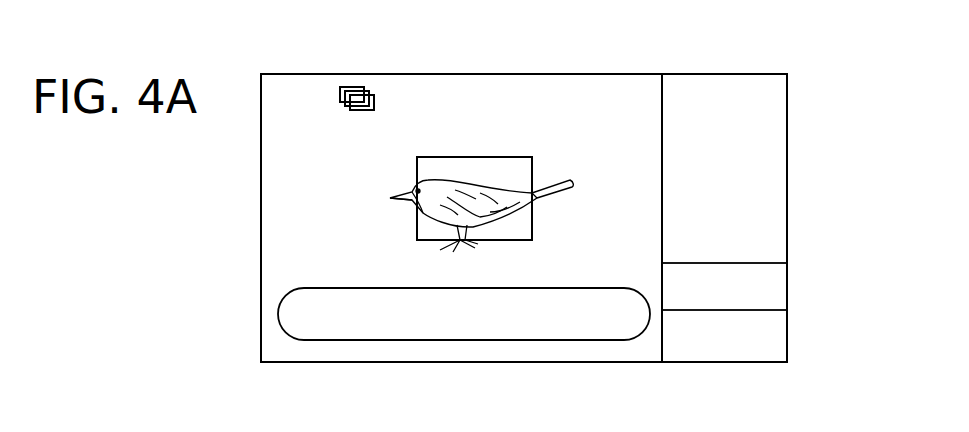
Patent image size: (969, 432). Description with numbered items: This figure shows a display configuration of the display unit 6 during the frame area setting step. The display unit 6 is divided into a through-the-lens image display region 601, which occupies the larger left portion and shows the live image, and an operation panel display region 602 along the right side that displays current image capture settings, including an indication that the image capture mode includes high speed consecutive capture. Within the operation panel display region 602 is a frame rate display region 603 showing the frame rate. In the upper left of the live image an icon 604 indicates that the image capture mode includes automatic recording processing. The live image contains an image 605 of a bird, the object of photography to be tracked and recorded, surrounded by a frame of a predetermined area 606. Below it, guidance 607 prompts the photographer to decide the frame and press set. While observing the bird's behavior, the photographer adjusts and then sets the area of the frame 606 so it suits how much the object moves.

The display unit 6 is at (500, 74).
The through-the-lens image display region 601 is at (410, 88).
The operation panel display region 602 is at (808, 362).
The frame rate display region 603 is at (730, 263).
The icon 604 is at (327, 75).
The image of a bird 605 is at (478, 185).
The frame of a predetermined area 606 is at (532, 172).
The guidance 607 is at (543, 340).